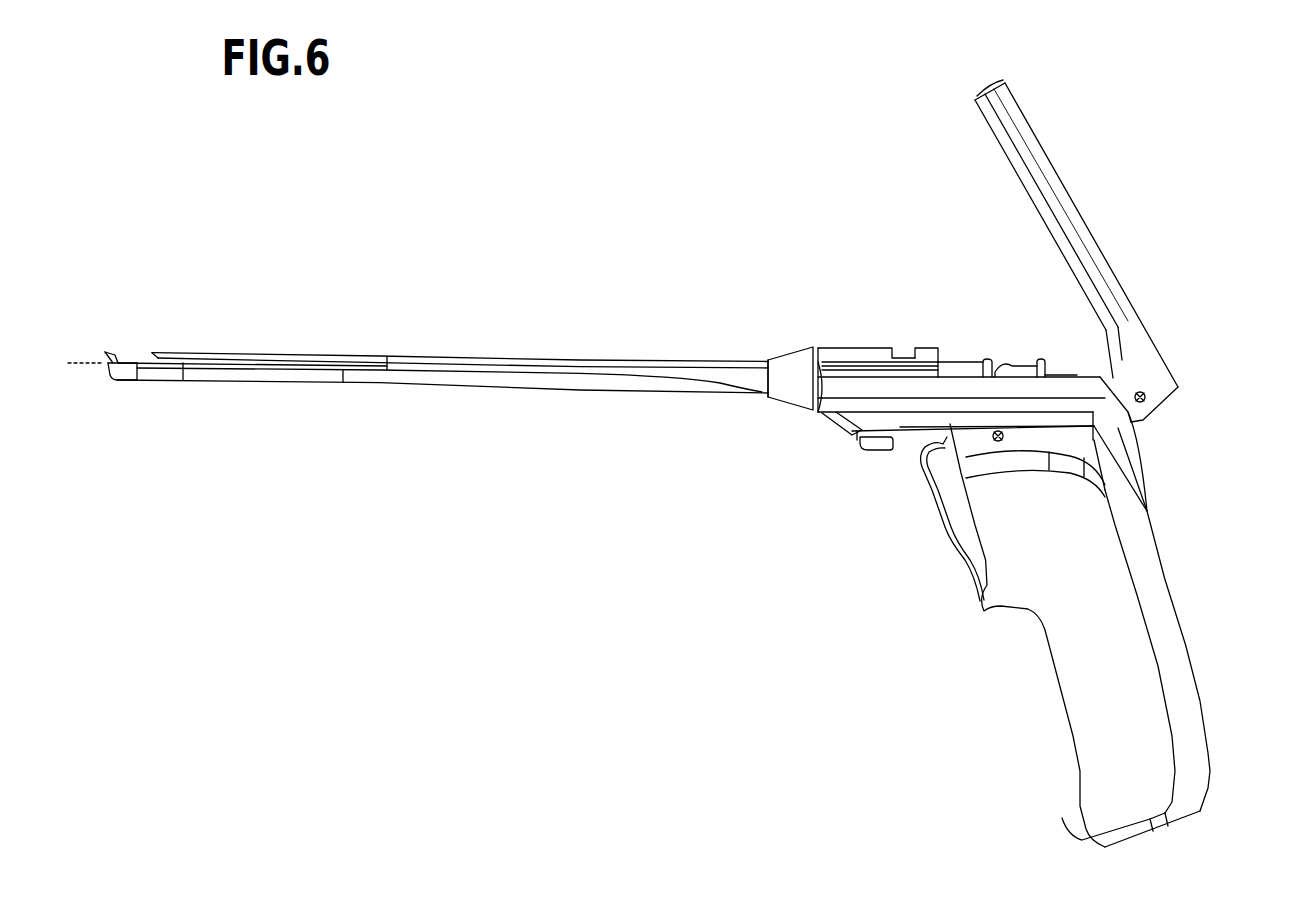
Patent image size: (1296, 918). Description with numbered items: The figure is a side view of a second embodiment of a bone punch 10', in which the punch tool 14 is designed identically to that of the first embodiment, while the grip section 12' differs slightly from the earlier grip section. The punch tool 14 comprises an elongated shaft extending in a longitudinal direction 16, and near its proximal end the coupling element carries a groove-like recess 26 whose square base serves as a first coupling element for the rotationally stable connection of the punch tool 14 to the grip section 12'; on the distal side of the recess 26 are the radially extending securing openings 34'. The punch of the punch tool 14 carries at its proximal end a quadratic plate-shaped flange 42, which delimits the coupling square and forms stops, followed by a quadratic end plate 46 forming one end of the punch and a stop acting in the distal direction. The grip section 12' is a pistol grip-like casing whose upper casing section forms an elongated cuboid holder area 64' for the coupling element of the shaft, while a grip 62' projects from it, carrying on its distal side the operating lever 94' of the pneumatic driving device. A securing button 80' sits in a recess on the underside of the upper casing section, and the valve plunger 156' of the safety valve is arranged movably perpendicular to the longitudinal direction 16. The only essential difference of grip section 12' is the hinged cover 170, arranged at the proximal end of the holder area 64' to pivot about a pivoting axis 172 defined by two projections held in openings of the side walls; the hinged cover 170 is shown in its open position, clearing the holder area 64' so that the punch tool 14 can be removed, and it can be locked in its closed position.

The bone punch 10' is at (670, 270).
The grip section 12' is at (1087, 629).
The punching tool 14 is at (347, 353).
The longitudinal direction 16 is at (100, 363).
The groove-like recess 26 is at (903, 357).
The securing openings 34' is at (1002, 320).
The flange 42 is at (983, 358).
The end plate 46 is at (1012, 358).
The grip 62' is at (1166, 665).
The holder area 64' is at (1056, 319).
The securing button 80' is at (858, 473).
The operating lever 94' is at (937, 519).
The valve plunger 156' is at (1144, 308).
The hinged cover 170 is at (1081, 230).
The pivoting axis 172 is at (1165, 401).